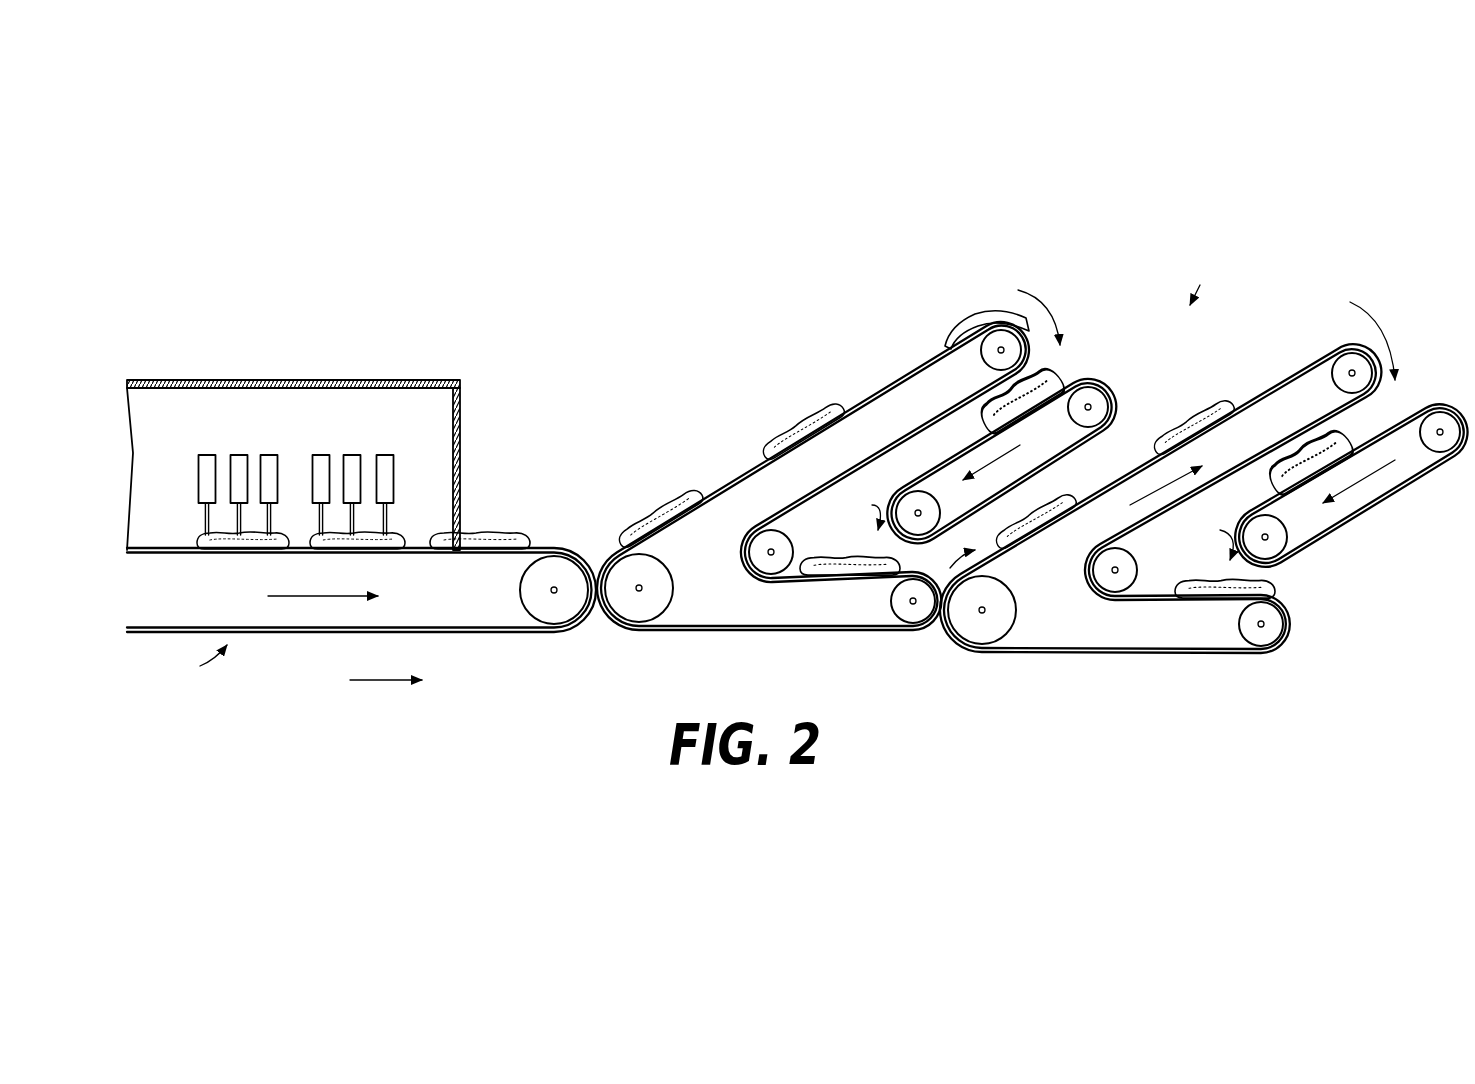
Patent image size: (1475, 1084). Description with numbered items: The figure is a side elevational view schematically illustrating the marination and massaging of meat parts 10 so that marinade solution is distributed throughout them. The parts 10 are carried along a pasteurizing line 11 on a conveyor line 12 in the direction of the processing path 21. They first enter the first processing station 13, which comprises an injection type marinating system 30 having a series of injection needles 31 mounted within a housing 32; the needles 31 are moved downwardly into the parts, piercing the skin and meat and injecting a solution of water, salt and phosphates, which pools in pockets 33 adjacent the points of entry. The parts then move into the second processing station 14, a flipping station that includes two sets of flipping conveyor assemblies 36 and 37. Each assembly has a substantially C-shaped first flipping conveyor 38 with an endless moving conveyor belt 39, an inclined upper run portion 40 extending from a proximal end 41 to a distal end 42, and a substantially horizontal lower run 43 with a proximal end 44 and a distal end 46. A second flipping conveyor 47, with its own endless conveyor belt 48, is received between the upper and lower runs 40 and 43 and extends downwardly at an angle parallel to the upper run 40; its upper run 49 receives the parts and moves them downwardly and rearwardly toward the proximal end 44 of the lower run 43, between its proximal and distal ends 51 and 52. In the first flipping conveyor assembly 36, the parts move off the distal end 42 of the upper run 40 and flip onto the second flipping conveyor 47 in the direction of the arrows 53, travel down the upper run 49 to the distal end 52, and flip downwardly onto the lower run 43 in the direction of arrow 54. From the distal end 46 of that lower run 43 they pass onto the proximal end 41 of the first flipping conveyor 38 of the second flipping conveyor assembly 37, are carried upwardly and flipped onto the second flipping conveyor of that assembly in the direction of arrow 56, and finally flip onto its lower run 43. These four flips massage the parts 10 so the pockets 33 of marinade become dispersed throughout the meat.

The parts 10 is at (527, 540).
The pasteurizing line 11 is at (385, 680).
The conveyor line 12 is at (484, 607).
The first processing station 13 is at (199, 663).
The second processing station 14 is at (1206, 280).
The processing path 21 is at (323, 581).
The injection type marinating system 30 is at (320, 437).
The injection needles 31 is at (296, 475).
The housing 32 is at (462, 398).
The pockets 33 is at (460, 508).
The first flipping conveyor assembly 36 is at (813, 518).
The second flipping conveyor assembly 37 is at (1133, 698).
The first flipping conveyor 38 is at (686, 636).
The conveyor belt 39 is at (715, 634).
The upper run portion 40 is at (737, 482).
The proximal end 41 is at (604, 565).
The distal end 42 is at (1013, 328).
The lower run 43 is at (848, 585).
The proximal end 44 is at (808, 560).
The distal end 46 is at (900, 604).
The second flipping conveyor 47 is at (1145, 380).
The conveyor belt 48 is at (1050, 438).
The upper run 49 is at (957, 455).
The proximal end 51 is at (1093, 380).
The distal end 52 is at (1245, 572).
The arrows 53 is at (1221, 320).
The arrow 54 is at (1038, 523).
The arrow 56 is at (995, 568).